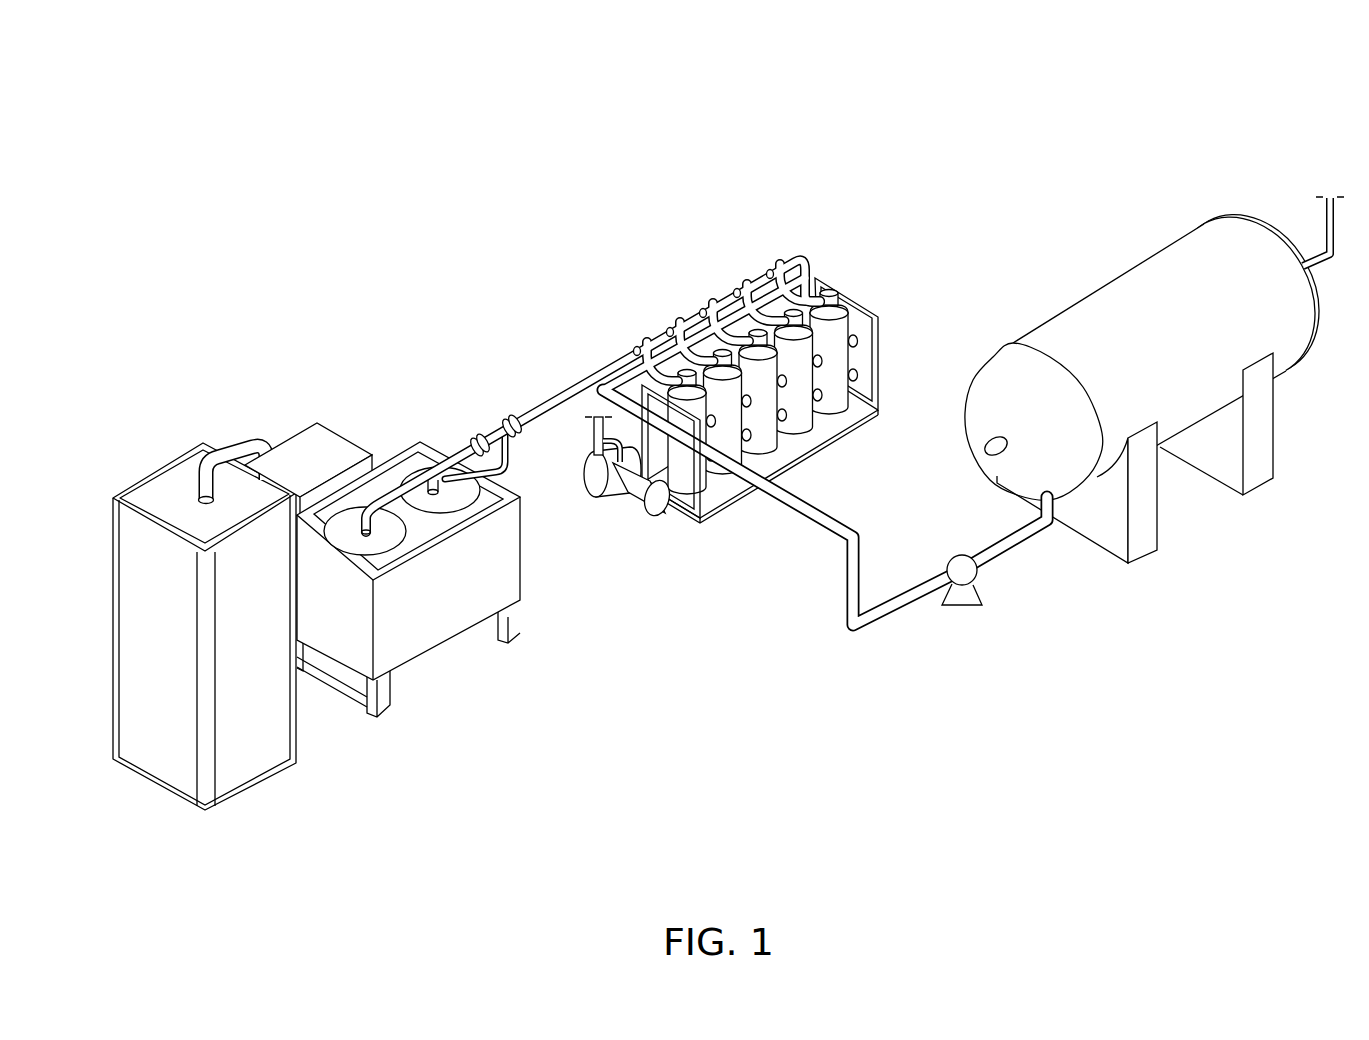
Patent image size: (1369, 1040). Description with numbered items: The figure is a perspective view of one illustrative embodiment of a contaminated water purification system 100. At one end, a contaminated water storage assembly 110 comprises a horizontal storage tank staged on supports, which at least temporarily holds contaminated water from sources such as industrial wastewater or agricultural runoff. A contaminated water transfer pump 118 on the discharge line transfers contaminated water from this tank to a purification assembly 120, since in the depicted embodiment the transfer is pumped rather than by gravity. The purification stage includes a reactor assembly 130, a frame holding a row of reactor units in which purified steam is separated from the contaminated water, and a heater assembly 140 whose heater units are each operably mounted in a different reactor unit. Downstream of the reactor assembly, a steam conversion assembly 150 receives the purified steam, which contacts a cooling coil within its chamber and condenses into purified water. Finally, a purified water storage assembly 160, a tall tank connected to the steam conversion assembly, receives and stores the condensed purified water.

The contaminated water purification system 100 is at (730, 454).
The contaminated water storage assembly 110 is at (1126, 258).
The contaminated water transfer pump 118 is at (980, 585).
The purification assembly 120 is at (843, 452).
The reactor assembly 130 is at (705, 415).
The heater assembly 140 is at (836, 319).
The steam conversion assembly 150 is at (458, 658).
The purified water storage assembly 160 is at (278, 797).